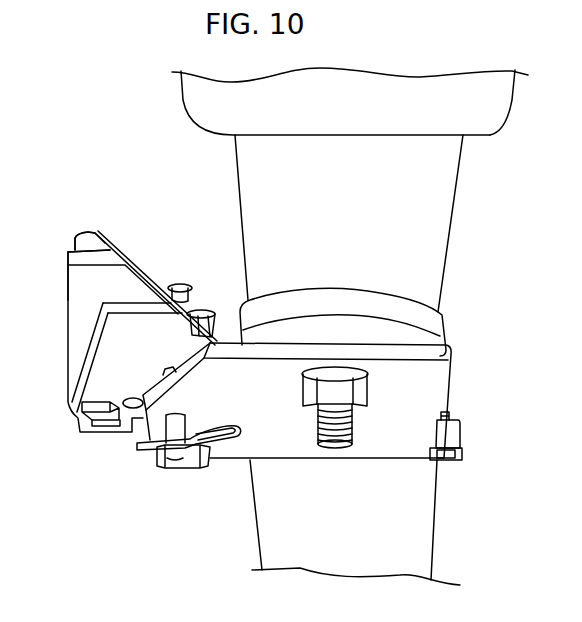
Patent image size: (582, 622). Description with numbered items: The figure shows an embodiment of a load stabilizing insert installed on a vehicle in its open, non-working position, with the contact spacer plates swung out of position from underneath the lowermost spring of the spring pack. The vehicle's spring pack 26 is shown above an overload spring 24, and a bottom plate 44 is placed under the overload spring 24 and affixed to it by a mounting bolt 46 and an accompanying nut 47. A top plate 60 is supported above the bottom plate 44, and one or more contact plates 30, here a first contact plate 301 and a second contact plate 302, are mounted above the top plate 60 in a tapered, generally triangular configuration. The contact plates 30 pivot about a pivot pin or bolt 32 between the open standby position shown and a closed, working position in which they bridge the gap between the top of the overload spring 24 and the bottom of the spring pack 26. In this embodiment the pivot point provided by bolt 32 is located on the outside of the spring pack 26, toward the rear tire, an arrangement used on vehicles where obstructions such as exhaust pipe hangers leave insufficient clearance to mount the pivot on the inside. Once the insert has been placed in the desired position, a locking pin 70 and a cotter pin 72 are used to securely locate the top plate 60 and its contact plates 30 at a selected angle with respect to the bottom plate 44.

The overload spring 24 is at (412, 340).
The spring pack 26 is at (258, 188).
The contact plates 30 is at (59, 240).
The contact plate 301 is at (86, 236).
The contact plate 302 is at (68, 252).
The pivot pin or bolt 32 is at (165, 470).
The bottom plate 44 is at (271, 399).
The mounting bolt 46 is at (352, 430).
The nut 47 is at (363, 400).
The top plate 60 is at (96, 352).
The locking pin 70 is at (178, 285).
The cotter pin 72 is at (135, 448).